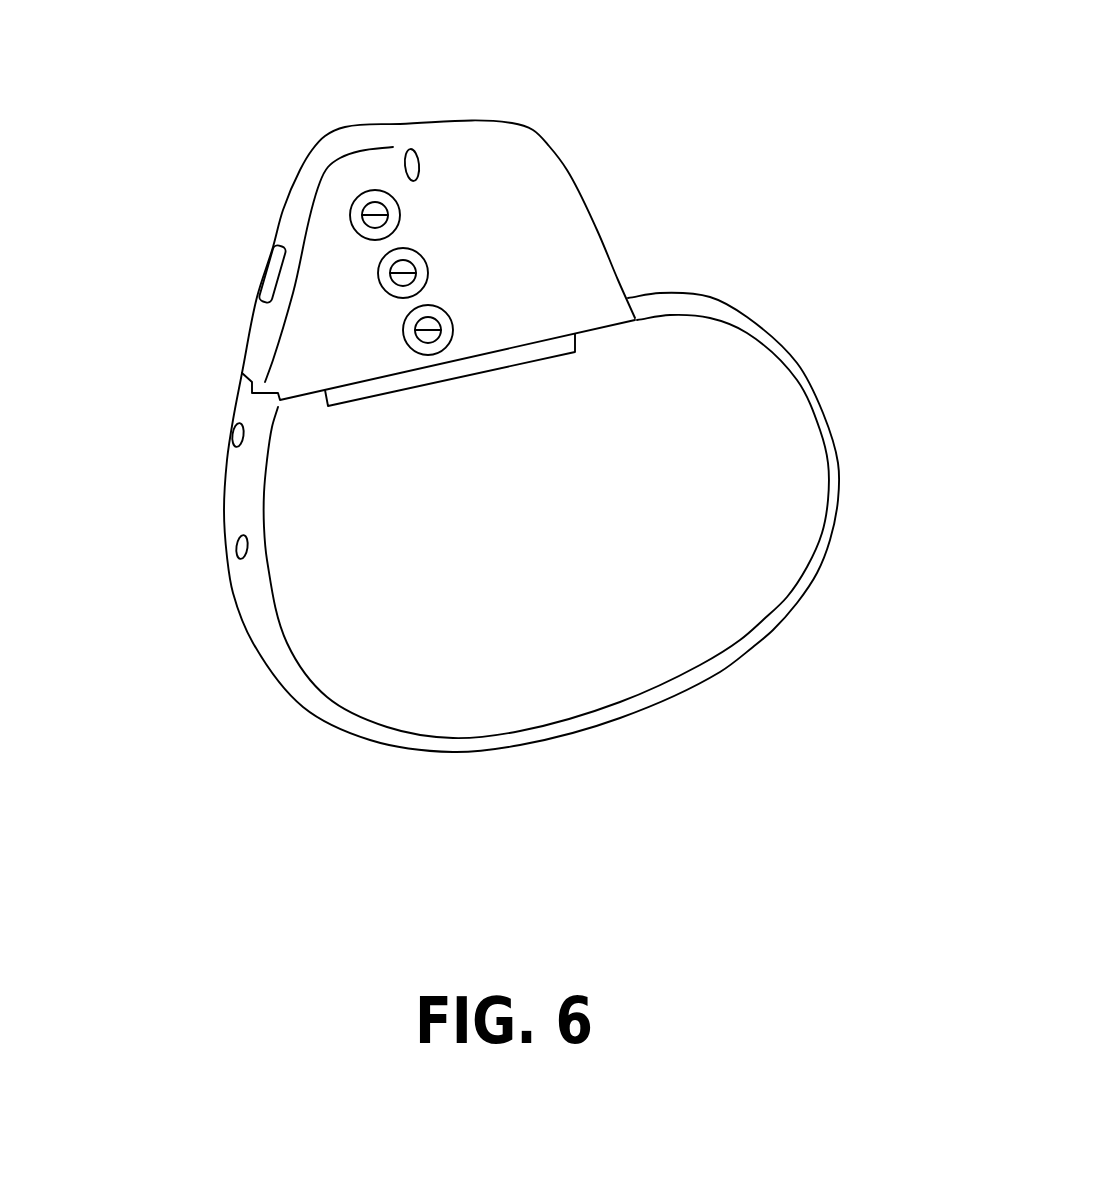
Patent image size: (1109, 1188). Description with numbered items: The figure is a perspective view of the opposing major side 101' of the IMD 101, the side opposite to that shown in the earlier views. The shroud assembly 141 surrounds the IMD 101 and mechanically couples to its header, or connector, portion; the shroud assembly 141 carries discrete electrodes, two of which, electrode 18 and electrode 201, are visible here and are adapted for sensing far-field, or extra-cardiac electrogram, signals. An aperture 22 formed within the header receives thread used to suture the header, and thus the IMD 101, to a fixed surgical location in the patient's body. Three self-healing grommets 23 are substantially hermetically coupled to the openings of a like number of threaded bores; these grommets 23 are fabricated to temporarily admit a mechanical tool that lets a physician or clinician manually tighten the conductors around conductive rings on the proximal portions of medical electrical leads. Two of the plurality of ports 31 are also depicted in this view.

The IMD 101 is at (488, 448).
The opposing major side 101' is at (546, 526).
The electrode 18 is at (466, 770).
The shroud assembly 141 is at (837, 442).
The aperture 22 is at (414, 163).
The self-healing grommets 23 is at (404, 338).
The electrode 201 is at (268, 276).
The ports 31 is at (230, 548).